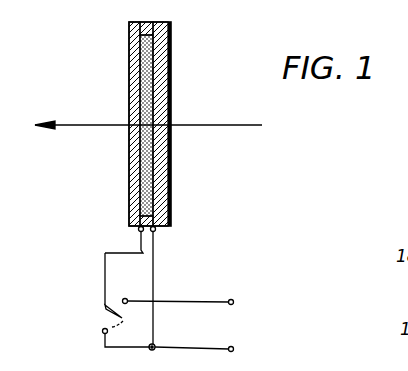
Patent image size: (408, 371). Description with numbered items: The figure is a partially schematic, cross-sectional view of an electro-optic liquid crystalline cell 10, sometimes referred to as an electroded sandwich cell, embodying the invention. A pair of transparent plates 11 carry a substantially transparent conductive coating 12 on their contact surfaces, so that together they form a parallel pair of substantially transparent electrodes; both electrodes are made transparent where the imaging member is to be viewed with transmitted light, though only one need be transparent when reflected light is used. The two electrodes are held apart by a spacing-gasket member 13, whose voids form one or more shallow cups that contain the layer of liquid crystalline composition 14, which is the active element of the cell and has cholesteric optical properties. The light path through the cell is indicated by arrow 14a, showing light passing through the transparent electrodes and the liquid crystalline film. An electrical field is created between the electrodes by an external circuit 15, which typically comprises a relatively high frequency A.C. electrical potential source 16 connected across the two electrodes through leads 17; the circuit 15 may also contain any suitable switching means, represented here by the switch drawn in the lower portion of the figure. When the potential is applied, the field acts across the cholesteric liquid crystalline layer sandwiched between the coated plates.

The electro-optic liquid crystalline cell 10 is at (150, 113).
The transparent plates 11 is at (129, 42).
The transparent conductive coating 12 is at (150, 30).
The spacing-gasket member 13 is at (130, 220).
The layer of liquid crystalline composition 14 is at (145, 98).
The light beam 14a is at (75, 130).
The external circuit 15 is at (222, 302).
The A.C. electrical potential source 16 is at (235, 298).
The leads 17 is at (166, 243).